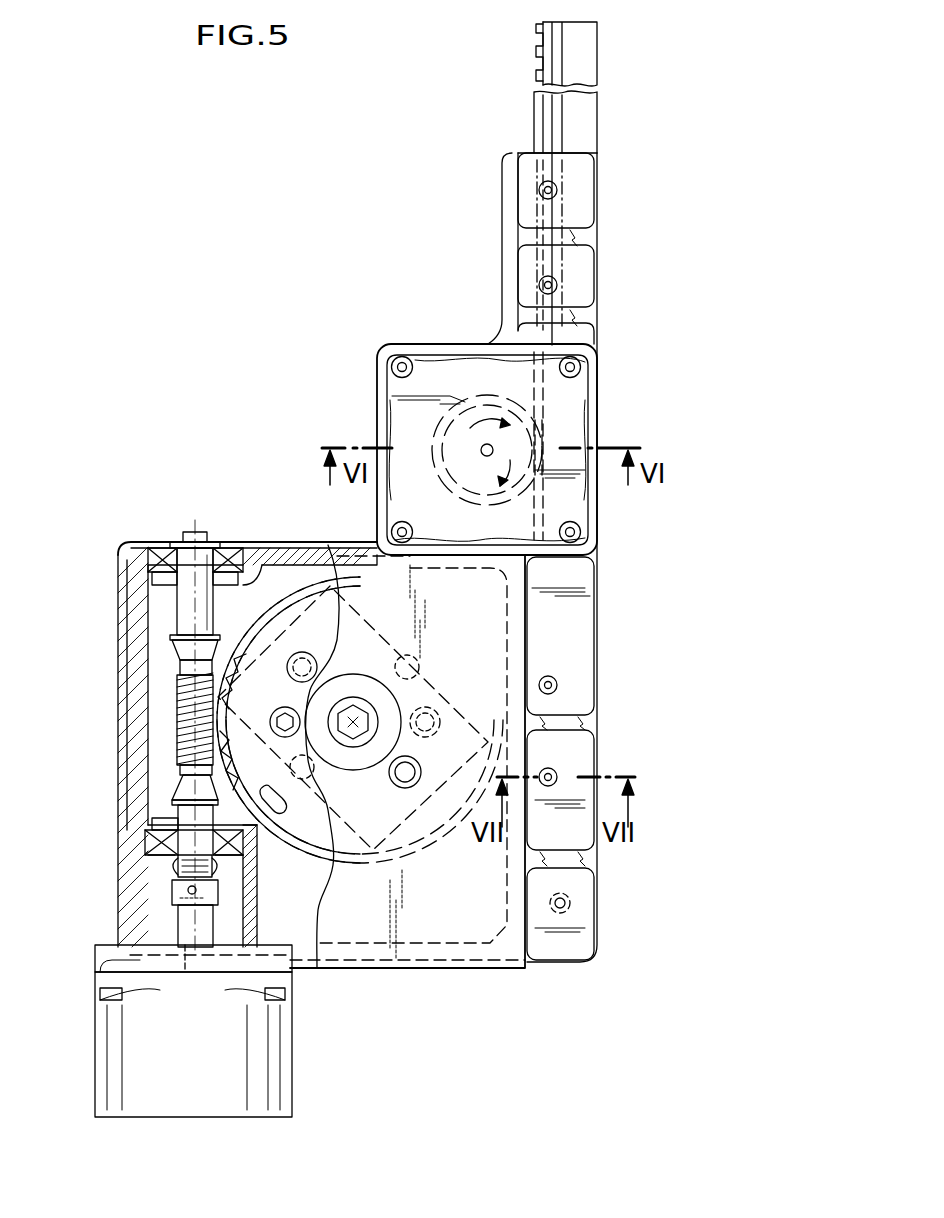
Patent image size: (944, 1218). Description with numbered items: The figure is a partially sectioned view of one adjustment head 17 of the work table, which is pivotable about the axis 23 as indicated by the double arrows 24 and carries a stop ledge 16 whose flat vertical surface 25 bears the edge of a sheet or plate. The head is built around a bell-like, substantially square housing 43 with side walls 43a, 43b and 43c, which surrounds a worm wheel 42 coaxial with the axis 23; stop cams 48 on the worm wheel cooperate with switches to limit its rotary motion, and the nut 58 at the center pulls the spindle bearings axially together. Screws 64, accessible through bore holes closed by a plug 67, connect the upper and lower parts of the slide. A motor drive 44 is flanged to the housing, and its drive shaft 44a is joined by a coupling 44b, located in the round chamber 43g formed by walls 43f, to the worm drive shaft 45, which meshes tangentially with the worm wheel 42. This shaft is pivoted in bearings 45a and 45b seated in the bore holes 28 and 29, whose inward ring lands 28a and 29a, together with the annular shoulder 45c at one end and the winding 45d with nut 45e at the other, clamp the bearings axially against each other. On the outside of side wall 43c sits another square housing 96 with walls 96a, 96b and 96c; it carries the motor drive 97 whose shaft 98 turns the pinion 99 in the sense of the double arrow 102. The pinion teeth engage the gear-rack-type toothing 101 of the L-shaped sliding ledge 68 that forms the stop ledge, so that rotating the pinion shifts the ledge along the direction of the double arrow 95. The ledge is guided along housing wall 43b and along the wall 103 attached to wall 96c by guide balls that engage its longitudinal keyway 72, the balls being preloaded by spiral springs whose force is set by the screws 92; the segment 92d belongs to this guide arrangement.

The gear-rack-type toothing 101 is at (536, 44).
The sliding ledge 68 is at (577, 62).
The double arrow 95 is at (633, 117).
The longitudinal keyway 72 is at (553, 130).
The vertical surface 25 is at (598, 180).
The stop ledge 16 is at (605, 266).
The wall 103 is at (502, 222).
The screws 92 is at (546, 190).
The housing 96 is at (368, 347).
The motor drive 97 is at (433, 360).
The wall 96c is at (447, 351).
The wall 96b is at (594, 392).
The wall 96a is at (378, 400).
The double arrow 102 is at (505, 422).
The shaft 98 is at (483, 450).
The pinion 99 is at (478, 494).
The guide segment 92d is at (575, 560).
The double arrows 24 is at (645, 818).
The adjustment head 17 is at (193, 430).
The annular shoulder 45c is at (186, 531).
The bearing 45a is at (162, 548).
The annular segment 28a is at (232, 568).
The bore hole 28 is at (170, 582).
The side wall 43c is at (318, 556).
The worm drive shaft 45 is at (188, 700).
The bore hole 29 is at (164, 830).
The annular segment 29a is at (152, 840).
The bearing 45b is at (168, 856).
The side wall 43a is at (168, 876).
The winding 45d is at (178, 866).
The nut 45e is at (214, 867).
The coupling 44b is at (172, 918).
The walls 43f is at (255, 913).
The chamber 43g is at (229, 962).
The drive shaft 44a is at (185, 972).
The motor drive 44 is at (275, 1050).
The worm wheel 42 is at (330, 855).
The axis 23 is at (355, 735).
The nut 58 is at (354, 715).
The screws 64 is at (285, 713).
The plug 67 is at (303, 662).
The stop cams 48 is at (284, 810).
The housing 43 is at (469, 972).
The side wall 43b is at (508, 864).